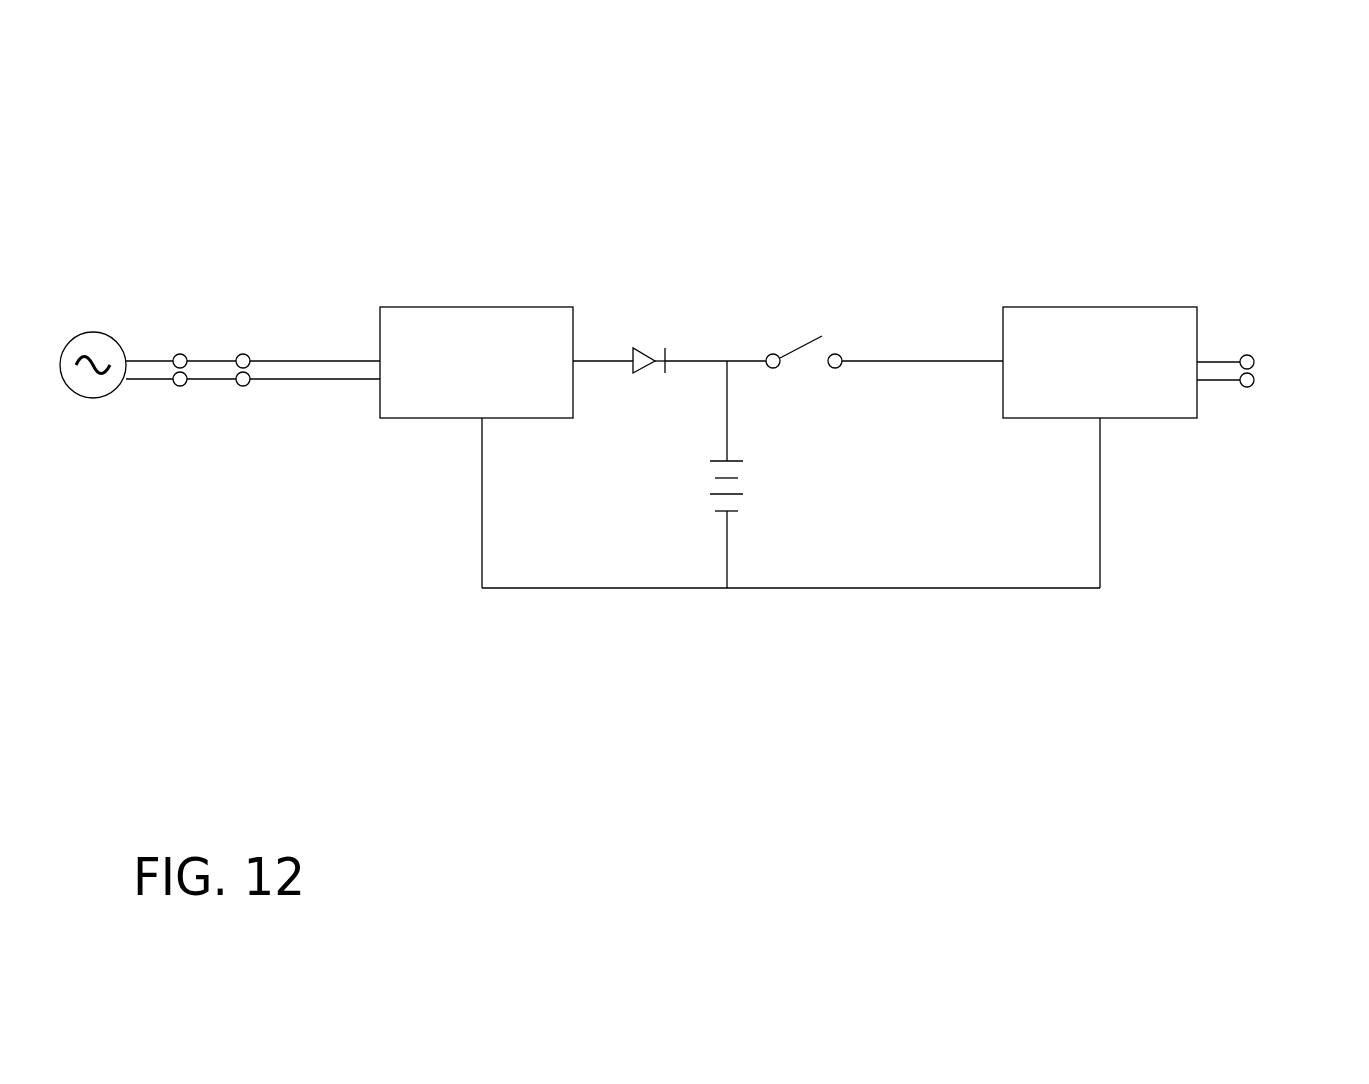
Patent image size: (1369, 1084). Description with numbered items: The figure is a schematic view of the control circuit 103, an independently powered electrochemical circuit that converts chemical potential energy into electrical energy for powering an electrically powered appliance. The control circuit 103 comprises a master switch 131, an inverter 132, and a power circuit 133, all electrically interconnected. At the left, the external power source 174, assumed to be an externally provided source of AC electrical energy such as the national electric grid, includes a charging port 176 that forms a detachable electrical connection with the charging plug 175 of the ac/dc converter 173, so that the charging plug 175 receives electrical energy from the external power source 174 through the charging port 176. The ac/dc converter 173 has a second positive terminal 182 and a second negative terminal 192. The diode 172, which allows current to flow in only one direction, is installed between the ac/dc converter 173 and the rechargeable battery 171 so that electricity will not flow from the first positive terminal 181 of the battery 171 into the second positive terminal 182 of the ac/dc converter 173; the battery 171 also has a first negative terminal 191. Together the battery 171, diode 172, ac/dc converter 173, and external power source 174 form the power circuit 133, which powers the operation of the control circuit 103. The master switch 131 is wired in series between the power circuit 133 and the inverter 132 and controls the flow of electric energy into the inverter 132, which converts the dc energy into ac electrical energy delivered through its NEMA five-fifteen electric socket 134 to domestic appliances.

The control circuit 103 is at (160, 180).
The external power source 174 is at (93, 332).
The charging port 176 is at (180, 387).
The charging plug 175 is at (243, 387).
The ac/dc converter 173 is at (462, 307).
The second positive terminal 182 is at (597, 360).
The diode 172 is at (643, 350).
The master switch 131 is at (800, 338).
The first positive terminal 181 is at (727, 410).
The battery 171 is at (745, 486).
The first negative terminal 191 is at (727, 536).
The second negative terminal 192 is at (482, 530).
The power circuit 133 is at (368, 530).
The inverter 132 is at (1172, 318).
The NEMA 5-15 Electric Socket 134 is at (1258, 373).